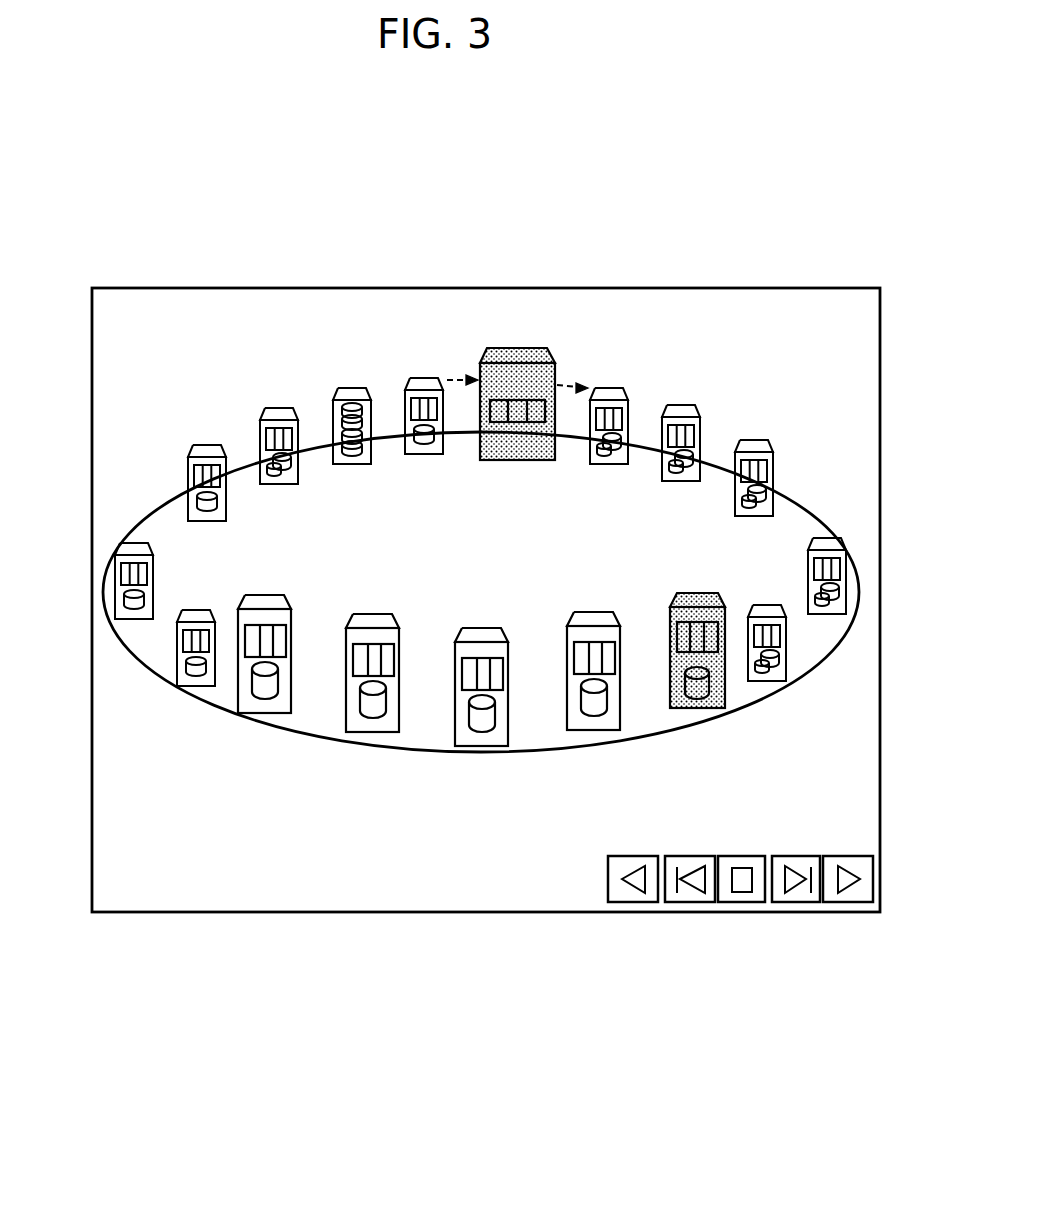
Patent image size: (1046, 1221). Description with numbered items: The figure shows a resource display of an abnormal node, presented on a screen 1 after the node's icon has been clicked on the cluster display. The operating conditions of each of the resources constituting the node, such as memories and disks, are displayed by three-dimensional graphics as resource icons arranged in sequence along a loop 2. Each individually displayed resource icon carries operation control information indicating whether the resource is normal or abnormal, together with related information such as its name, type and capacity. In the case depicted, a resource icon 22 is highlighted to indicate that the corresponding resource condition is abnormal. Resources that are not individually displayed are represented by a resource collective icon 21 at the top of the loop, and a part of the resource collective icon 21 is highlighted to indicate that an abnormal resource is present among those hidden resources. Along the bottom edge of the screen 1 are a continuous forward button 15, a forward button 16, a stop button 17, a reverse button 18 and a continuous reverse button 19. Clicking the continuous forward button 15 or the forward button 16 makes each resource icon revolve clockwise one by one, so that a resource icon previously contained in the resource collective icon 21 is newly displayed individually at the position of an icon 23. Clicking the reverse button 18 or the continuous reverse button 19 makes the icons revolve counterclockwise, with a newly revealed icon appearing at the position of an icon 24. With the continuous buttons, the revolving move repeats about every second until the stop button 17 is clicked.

The screen 1 is at (145, 289).
The loop 2 is at (244, 465).
The continuous forward button 15 is at (623, 897).
The forward button 16 is at (685, 897).
The stop button 17 is at (741, 897).
The reverse button 18 is at (796, 897).
The continuous reverse button 19 is at (853, 897).
The resource collective icon 21 is at (517, 348).
The resource icon 22 is at (670, 682).
The icon 23 is at (612, 390).
The icon 24 is at (425, 378).